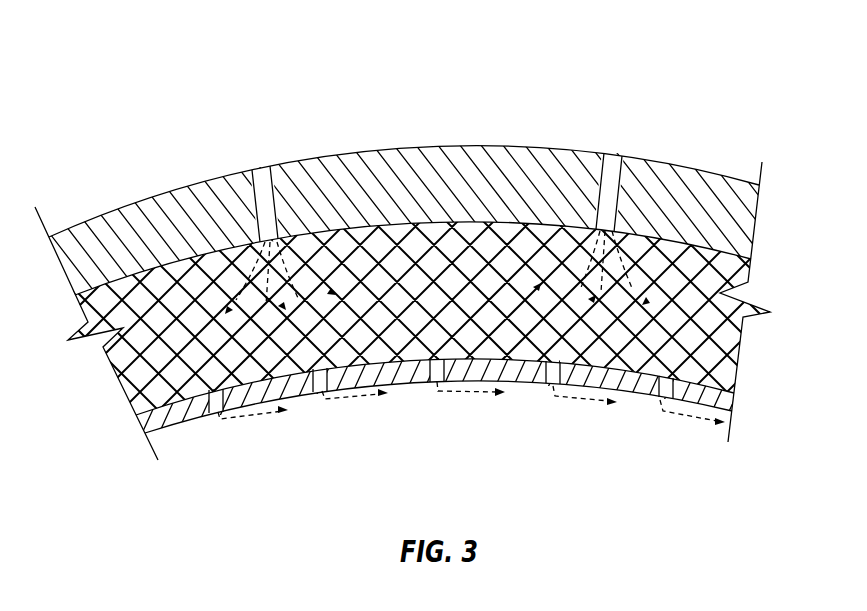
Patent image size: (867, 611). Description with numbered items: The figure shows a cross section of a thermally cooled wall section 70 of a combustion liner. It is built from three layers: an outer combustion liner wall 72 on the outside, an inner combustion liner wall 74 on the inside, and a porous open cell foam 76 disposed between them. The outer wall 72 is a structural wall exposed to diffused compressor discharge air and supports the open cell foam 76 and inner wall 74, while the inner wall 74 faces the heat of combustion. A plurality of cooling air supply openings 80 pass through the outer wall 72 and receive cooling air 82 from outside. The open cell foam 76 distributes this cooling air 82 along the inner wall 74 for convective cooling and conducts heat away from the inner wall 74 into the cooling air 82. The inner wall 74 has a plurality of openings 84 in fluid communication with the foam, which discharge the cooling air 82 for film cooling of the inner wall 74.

The thermally cooled wall section 70 is at (133, 55).
The outer combustion liner wall 72 is at (703, 188).
The inner combustion liner wall 74 is at (723, 401).
The porous open cell foam 76 is at (728, 333).
The cooling air supply openings 80 is at (274, 167).
The cooling air 82 is at (357, 396).
The openings 84 is at (310, 373).